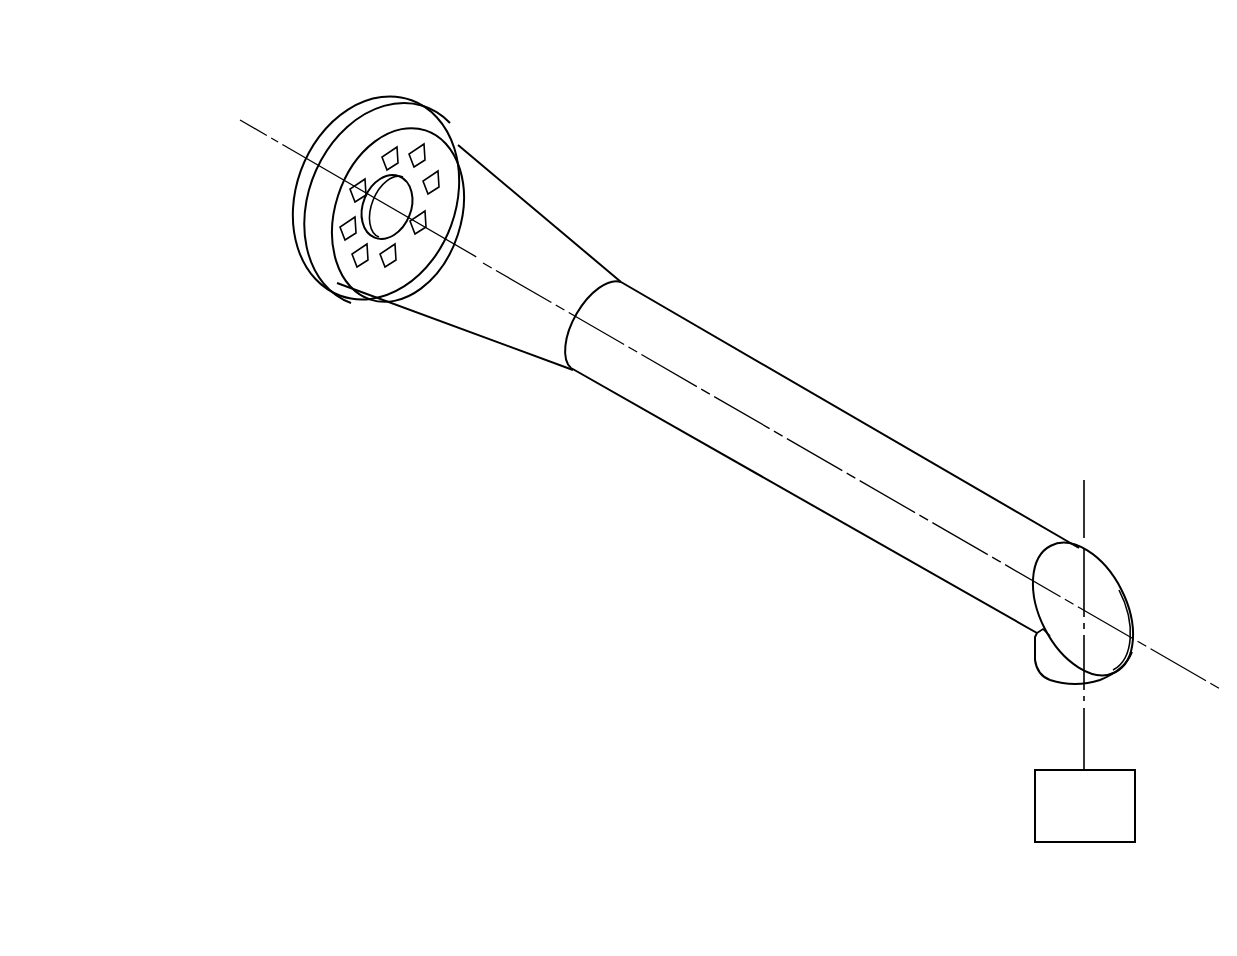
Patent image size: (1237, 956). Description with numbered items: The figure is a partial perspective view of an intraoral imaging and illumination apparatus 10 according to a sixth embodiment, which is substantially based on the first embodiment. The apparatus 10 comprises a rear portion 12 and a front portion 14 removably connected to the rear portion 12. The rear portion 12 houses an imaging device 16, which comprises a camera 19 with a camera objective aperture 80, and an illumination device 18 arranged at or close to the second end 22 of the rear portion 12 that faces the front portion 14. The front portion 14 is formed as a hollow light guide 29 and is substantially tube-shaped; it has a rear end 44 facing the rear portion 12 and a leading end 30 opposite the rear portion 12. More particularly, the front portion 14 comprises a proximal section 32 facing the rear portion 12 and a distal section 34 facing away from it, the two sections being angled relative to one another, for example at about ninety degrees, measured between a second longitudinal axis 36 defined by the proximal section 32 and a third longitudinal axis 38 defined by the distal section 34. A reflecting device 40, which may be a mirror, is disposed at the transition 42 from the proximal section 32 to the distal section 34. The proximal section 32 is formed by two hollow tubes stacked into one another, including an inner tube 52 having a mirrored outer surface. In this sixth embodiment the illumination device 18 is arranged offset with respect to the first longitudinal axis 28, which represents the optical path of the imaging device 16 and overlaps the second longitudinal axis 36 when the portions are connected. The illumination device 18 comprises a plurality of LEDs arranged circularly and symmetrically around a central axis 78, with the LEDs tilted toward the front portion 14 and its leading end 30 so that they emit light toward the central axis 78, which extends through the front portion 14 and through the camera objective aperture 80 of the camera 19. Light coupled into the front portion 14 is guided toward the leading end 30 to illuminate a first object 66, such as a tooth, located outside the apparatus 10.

The intraoral imaging and illumination apparatus 10 is at (883, 160).
The rear portion 12 is at (385, 104).
The front portion 14 is at (885, 373).
The imaging device 16 is at (296, 206).
The camera 19 is at (296, 206).
The camera objective aperture 80 is at (370, 218).
The illumination device 18 is at (420, 153).
The second end 22 is at (455, 125).
The first longitudinal axis 28 is at (262, 130).
The light guide 29 is at (855, 345).
The leading end 30 is at (1128, 683).
The proximal section 32 is at (765, 362).
The distal section 34 is at (1135, 667).
The second longitudinal axis 36 is at (922, 483).
The third longitudinal axis 38 is at (1087, 740).
The reflecting device 40 is at (1103, 630).
The transition 42 is at (1110, 570).
The rear end 44 is at (399, 285).
The inner tube 52 is at (743, 468).
The first object 66 is at (1135, 807).
The central axis 78 is at (652, 358).